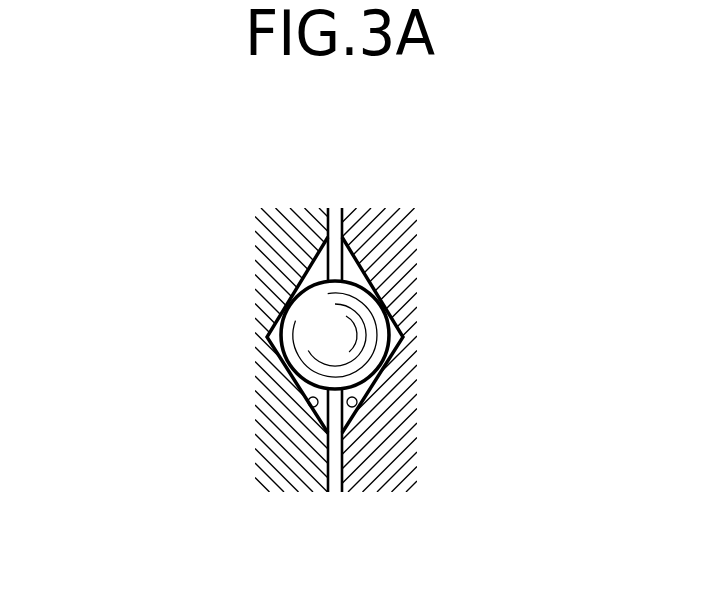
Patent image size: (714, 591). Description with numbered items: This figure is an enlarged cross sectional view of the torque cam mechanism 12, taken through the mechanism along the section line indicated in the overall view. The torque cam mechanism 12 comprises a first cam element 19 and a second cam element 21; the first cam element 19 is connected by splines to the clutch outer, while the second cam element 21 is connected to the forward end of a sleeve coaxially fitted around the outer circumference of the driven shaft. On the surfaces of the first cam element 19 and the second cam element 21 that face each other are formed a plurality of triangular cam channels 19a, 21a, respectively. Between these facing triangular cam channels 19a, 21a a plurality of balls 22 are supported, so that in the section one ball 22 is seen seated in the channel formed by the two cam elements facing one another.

The torque cam mechanism 12 is at (400, 183).
The first cam element 19 is at (262, 300).
The second cam element 21 is at (413, 310).
The triangular cam channels 19a is at (298, 393).
The triangular cam channels 21a is at (370, 393).
The balls 22 is at (322, 353).